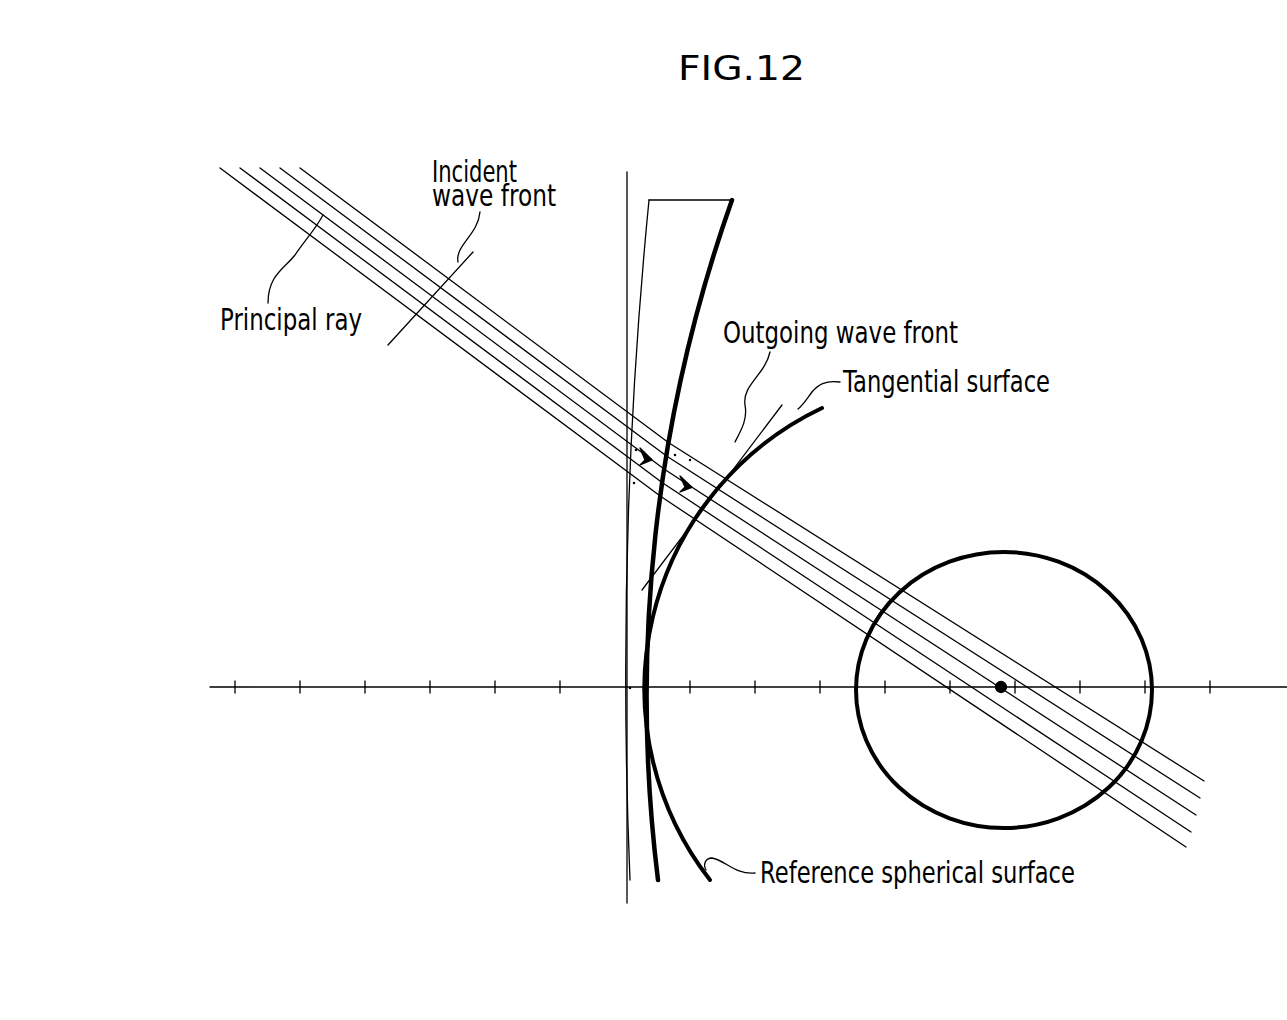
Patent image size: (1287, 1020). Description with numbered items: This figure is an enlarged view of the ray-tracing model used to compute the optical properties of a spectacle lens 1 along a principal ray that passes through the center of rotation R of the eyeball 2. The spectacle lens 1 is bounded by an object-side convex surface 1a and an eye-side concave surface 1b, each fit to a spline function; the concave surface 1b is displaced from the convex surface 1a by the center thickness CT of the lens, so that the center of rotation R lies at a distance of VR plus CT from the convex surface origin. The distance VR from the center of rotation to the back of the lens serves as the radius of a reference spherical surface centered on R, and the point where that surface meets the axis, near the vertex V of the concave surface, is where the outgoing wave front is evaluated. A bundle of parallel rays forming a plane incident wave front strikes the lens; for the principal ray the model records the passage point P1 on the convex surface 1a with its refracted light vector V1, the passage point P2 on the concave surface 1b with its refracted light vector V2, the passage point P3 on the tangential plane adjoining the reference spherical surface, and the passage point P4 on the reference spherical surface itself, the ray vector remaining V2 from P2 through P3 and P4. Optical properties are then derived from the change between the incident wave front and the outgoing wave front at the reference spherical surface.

The spectacle lens 1 is at (804, 492).
The convex surface 1a is at (650, 264).
The concave surface 1b is at (722, 262).
The eyeball 2 is at (983, 552).
The center of rotation R is at (1001, 686).
The vertex of concave surface V is at (646, 688).
The center thickness of spectacle lens CT is at (630, 690).
The distance from the center of rotation VR is at (1001, 690).
The passage point on the lens convex surface P1 is at (640, 450).
The passage point on the lens concave surface P2 is at (674, 455).
The passage point on the tangential plane P3 is at (720, 485).
The passage point on the reference spherical surface P4 is at (720, 485).
The refracted light vector V1 is at (635, 483).
The refracted light vector V2 is at (690, 460).